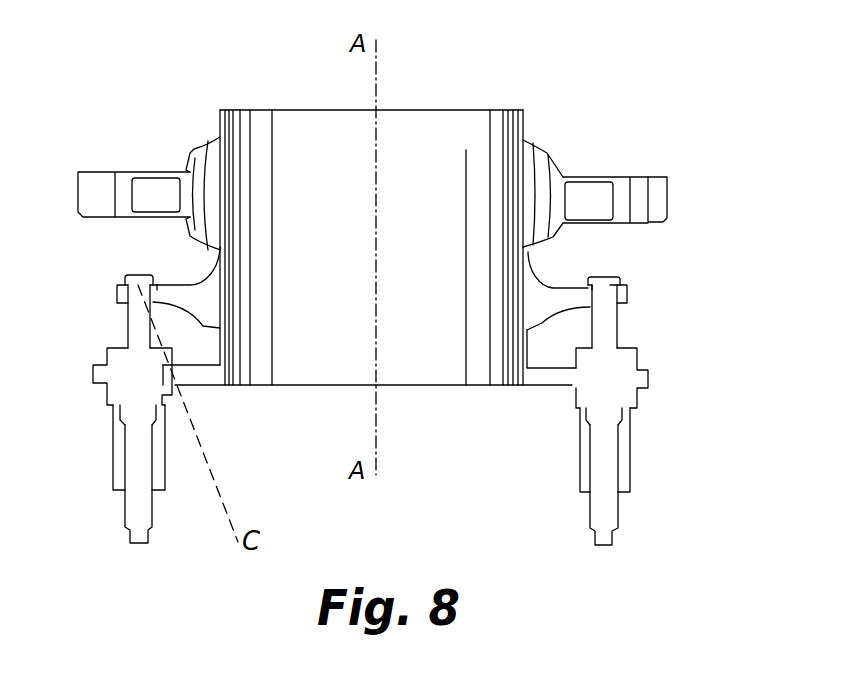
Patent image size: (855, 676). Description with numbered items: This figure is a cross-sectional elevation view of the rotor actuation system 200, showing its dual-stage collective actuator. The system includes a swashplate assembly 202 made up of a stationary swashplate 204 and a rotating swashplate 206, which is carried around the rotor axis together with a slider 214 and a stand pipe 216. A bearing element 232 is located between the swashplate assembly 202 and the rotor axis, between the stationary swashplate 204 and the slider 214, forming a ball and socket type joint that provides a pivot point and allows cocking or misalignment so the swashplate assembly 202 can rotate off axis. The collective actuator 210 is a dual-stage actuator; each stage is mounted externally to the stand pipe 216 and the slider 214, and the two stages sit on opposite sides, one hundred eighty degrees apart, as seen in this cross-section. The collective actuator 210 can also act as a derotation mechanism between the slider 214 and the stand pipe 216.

The rotor actuation system 200 is at (495, 87).
The swashplate assembly 202 is at (107, 172).
The stationary swashplate 204 is at (568, 174).
The rotating swashplate 206 is at (663, 197).
The collective actuator 210 is at (632, 462).
The slider 214 is at (629, 297).
The stand pipe 216 is at (650, 380).
The bearing element 232 is at (204, 150).